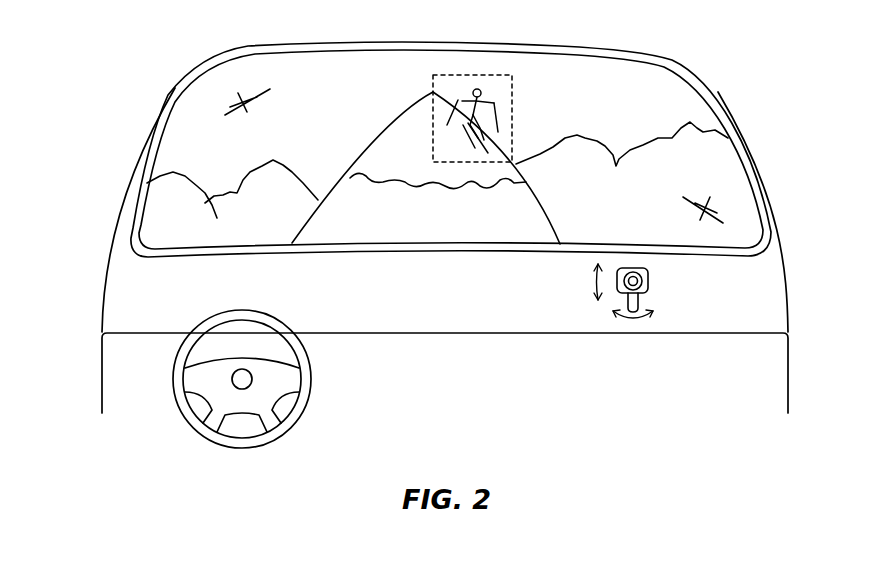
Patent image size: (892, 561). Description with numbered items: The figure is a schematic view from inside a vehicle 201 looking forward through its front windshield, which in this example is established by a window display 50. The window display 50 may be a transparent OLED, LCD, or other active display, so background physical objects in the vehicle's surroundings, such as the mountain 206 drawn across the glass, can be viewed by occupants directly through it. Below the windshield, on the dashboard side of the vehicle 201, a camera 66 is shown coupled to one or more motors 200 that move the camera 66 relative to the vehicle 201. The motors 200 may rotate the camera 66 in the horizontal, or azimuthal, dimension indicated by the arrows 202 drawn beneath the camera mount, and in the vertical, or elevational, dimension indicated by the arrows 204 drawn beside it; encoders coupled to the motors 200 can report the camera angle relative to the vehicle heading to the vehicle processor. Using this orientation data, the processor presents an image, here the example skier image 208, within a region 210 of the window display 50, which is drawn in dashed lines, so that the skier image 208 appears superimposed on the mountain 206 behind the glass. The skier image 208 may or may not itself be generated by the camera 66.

The window display 50 is at (290, 90).
The vehicle 201 is at (128, 297).
The mountain 206 is at (398, 117).
The skier image 208 is at (497, 115).
The region 210 is at (487, 75).
The camera 66 is at (650, 282).
The motors 200 is at (640, 301).
The arrows 202 is at (630, 320).
The arrows 204 is at (593, 282).